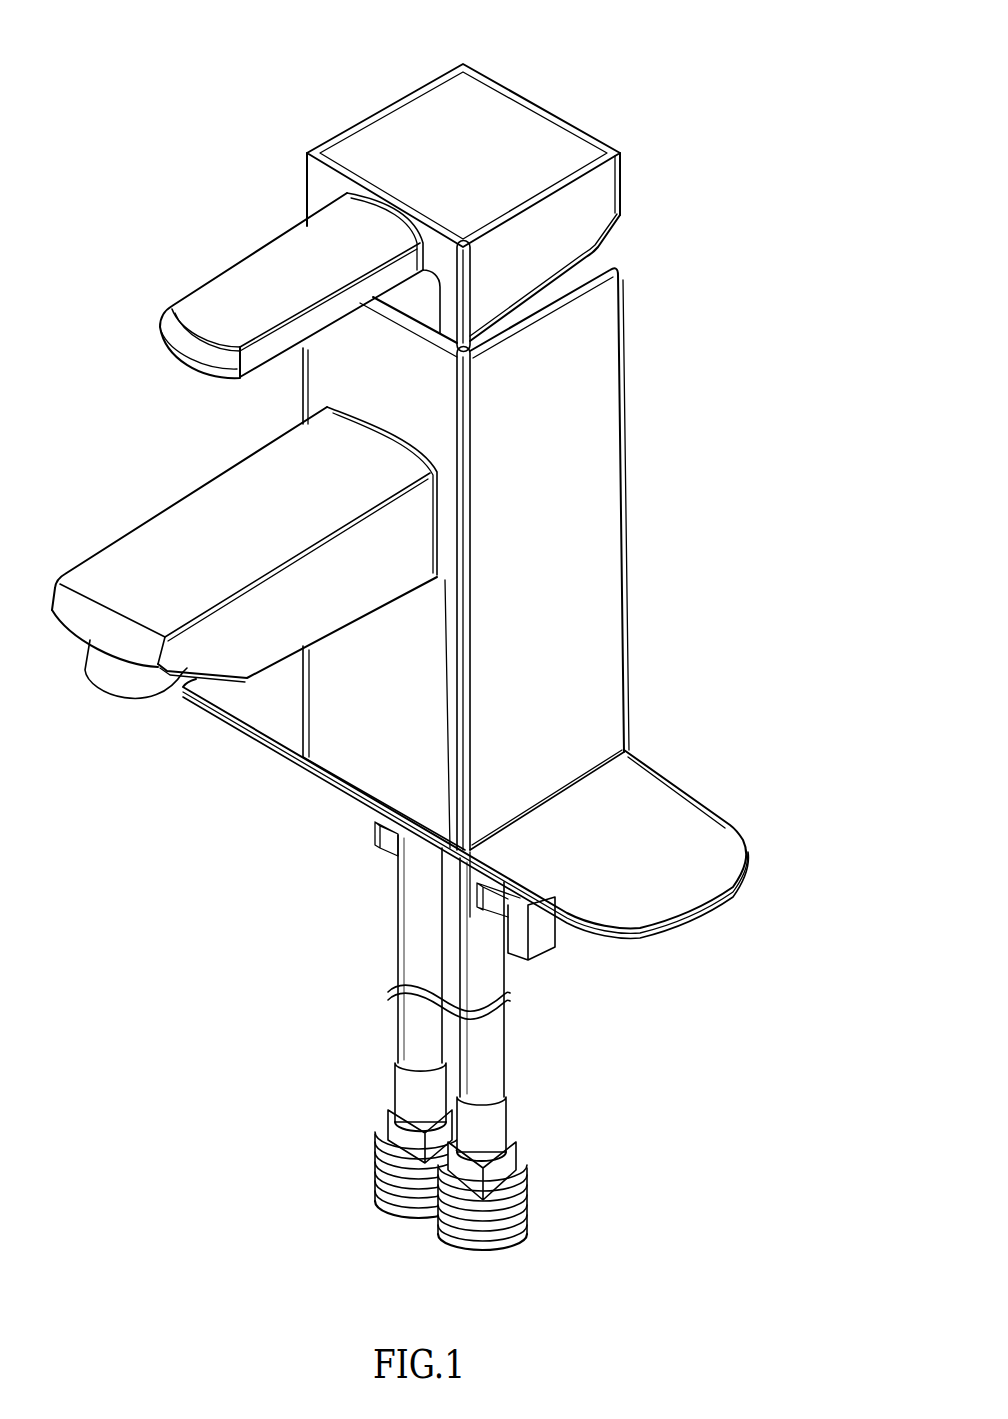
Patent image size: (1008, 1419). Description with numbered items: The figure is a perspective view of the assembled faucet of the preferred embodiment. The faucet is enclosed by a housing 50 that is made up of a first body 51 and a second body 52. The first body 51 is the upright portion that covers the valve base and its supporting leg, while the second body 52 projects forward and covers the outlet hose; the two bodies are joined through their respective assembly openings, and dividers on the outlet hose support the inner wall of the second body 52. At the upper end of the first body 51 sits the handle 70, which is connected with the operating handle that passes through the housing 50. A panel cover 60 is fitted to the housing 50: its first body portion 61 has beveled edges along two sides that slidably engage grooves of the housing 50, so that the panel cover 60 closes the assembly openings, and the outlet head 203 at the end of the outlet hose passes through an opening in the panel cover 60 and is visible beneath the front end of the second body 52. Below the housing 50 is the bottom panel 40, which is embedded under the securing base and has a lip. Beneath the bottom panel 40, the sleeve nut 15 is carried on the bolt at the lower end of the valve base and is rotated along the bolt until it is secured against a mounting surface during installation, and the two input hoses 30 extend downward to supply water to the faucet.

The handle 70 is at (372, 94).
The housing 50 is at (484, 559).
The first body 51 is at (625, 667).
The second body 52 is at (180, 517).
The panel cover 60 is at (428, 672).
The first body portion 61 is at (318, 757).
The outlet head 203 is at (117, 694).
The bottom panel 40 is at (775, 866).
The sleeve nut 15 is at (548, 939).
The input hoses 30 is at (378, 1088).